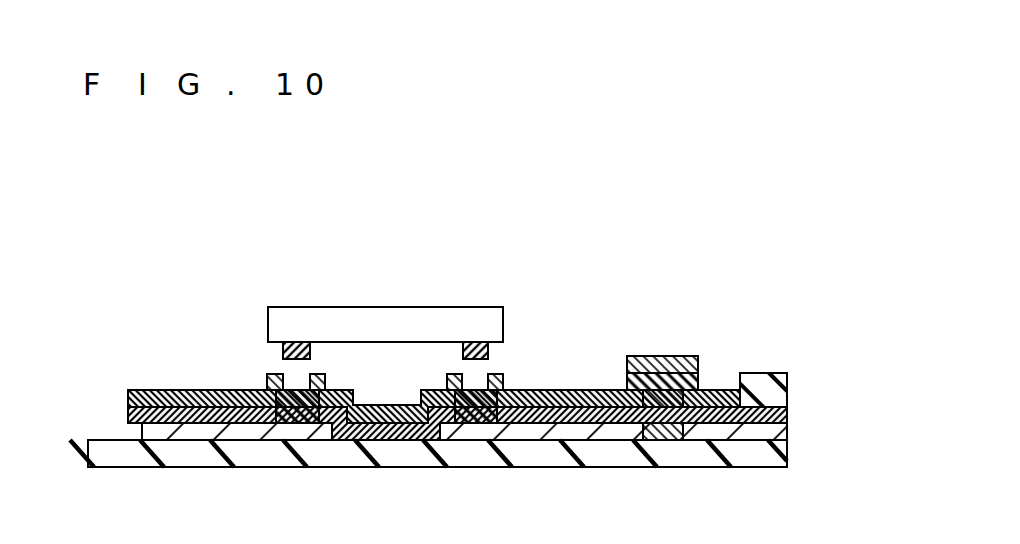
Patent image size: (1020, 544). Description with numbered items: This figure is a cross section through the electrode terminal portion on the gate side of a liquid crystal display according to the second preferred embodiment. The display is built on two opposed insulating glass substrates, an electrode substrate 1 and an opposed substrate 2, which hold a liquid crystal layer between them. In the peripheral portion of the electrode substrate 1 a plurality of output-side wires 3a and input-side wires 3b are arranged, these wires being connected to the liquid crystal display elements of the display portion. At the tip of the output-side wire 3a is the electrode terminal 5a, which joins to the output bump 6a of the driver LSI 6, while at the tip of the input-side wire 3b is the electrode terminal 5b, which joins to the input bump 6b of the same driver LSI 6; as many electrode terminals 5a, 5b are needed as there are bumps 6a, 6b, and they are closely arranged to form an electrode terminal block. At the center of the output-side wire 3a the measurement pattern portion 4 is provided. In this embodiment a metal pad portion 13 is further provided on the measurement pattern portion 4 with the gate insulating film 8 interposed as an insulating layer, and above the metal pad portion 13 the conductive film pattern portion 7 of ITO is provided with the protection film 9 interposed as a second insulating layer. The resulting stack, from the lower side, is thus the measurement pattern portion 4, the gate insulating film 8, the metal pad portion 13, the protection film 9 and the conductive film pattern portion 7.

The electrode substrate 1 is at (772, 452).
The opposed substrate 2 is at (772, 387).
The output-side wire 3a is at (553, 435).
The input-side wire 3b is at (145, 435).
The measurement pattern portion 4 is at (665, 440).
The electrode terminal 5a is at (474, 423).
The electrode terminal 5b is at (316, 423).
The driver LSI 6 is at (383, 321).
The output bump 6a is at (463, 350).
The input bump 6b is at (283, 352).
The conductive film pattern portion 7 is at (668, 356).
The gate insulating film 8 is at (128, 415).
The protection film 9 is at (128, 397).
The metal pad portion 13 is at (700, 372).